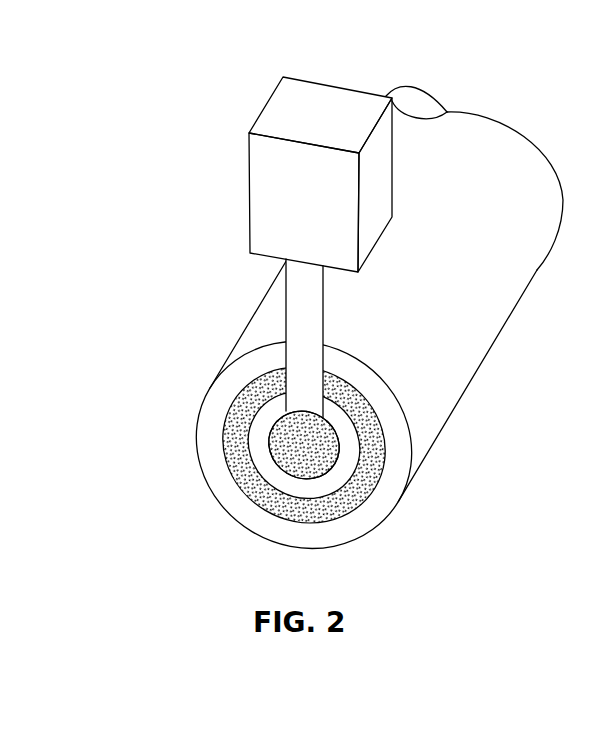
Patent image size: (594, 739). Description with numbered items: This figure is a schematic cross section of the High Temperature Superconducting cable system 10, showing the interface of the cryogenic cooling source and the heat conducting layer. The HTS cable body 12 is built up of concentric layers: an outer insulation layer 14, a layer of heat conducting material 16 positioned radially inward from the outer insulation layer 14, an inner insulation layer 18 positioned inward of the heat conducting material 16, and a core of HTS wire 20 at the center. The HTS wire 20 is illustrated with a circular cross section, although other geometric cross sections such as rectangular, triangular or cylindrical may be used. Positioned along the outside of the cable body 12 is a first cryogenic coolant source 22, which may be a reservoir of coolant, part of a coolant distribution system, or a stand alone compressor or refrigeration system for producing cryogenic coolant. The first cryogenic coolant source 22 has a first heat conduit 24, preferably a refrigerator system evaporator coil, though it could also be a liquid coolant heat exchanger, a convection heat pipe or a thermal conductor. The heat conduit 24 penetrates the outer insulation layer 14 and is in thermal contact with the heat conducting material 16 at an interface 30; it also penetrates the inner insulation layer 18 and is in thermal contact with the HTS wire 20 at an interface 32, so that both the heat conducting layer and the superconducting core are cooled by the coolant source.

The High Temperature Superconducting (HTS) cable system 10 is at (176, 97).
The HTS cable body 12 is at (508, 329).
The outer insulation layer 14 is at (347, 370).
The layer of heat conducting material 16 is at (363, 422).
The inner insulation layer 18 is at (343, 473).
The HTS wire 20 is at (300, 463).
The first cryogenic coolant source 22 is at (249, 190).
The first heat conduit 24 is at (285, 303).
The interface 30 is at (285, 367).
The interface 32 is at (287, 398).